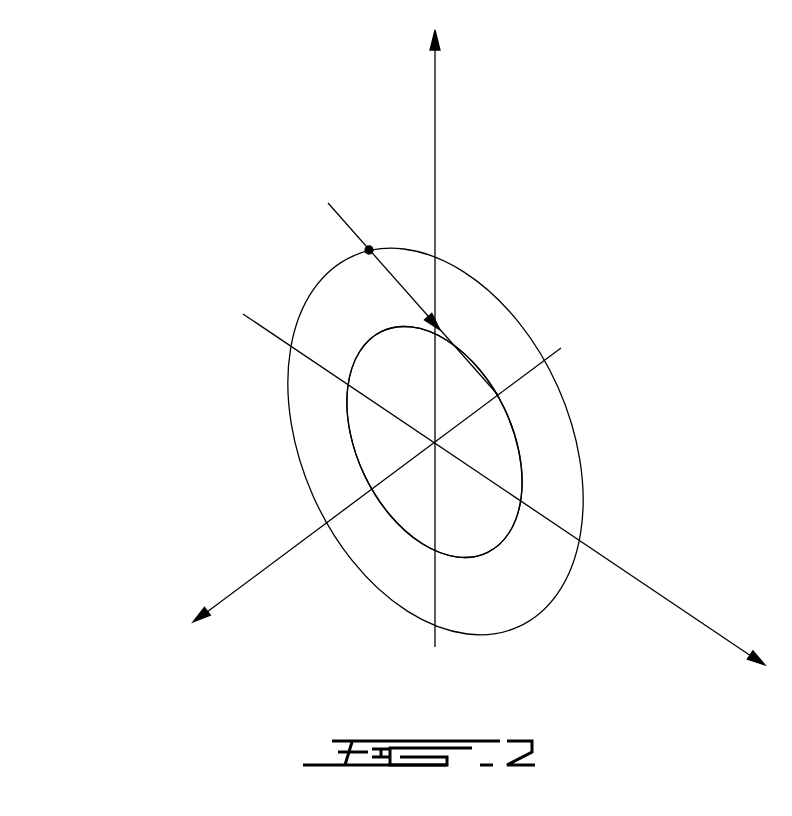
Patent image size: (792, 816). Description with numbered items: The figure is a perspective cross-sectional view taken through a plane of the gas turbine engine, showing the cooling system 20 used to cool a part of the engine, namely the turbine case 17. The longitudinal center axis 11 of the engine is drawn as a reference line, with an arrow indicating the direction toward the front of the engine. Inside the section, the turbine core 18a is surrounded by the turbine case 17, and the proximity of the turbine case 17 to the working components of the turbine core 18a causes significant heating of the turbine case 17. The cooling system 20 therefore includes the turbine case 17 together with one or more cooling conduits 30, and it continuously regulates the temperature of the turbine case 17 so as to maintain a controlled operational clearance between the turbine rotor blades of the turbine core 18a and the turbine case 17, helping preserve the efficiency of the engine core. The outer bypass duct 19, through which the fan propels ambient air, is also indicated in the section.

The longitudinal center axis 11 is at (243, 583).
The turbine case 17 is at (534, 431).
The turbine core 18a is at (489, 515).
The outer bypass duct 19 is at (398, 202).
The cooling system 20 is at (196, 430).
The cooling conduit 30 is at (398, 285).